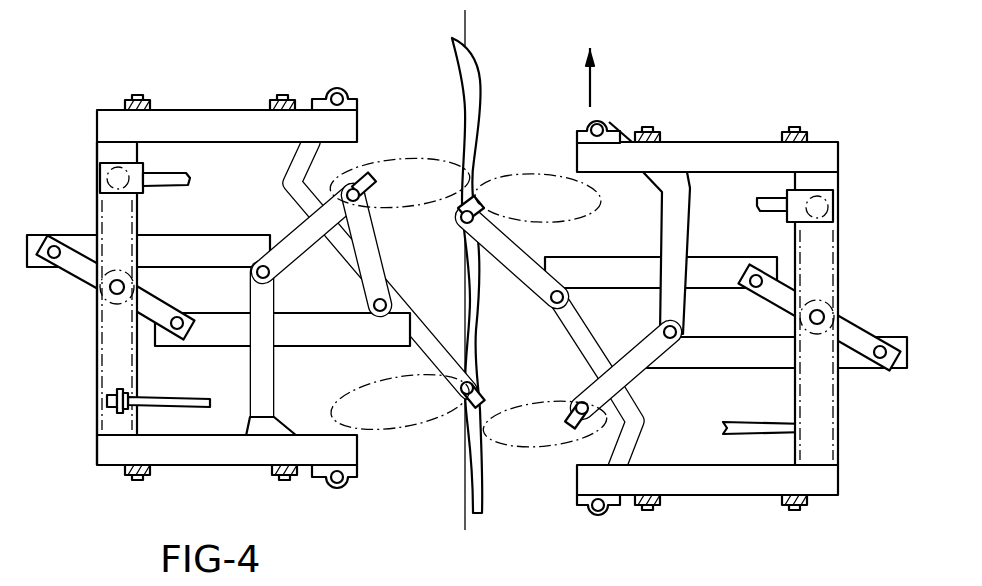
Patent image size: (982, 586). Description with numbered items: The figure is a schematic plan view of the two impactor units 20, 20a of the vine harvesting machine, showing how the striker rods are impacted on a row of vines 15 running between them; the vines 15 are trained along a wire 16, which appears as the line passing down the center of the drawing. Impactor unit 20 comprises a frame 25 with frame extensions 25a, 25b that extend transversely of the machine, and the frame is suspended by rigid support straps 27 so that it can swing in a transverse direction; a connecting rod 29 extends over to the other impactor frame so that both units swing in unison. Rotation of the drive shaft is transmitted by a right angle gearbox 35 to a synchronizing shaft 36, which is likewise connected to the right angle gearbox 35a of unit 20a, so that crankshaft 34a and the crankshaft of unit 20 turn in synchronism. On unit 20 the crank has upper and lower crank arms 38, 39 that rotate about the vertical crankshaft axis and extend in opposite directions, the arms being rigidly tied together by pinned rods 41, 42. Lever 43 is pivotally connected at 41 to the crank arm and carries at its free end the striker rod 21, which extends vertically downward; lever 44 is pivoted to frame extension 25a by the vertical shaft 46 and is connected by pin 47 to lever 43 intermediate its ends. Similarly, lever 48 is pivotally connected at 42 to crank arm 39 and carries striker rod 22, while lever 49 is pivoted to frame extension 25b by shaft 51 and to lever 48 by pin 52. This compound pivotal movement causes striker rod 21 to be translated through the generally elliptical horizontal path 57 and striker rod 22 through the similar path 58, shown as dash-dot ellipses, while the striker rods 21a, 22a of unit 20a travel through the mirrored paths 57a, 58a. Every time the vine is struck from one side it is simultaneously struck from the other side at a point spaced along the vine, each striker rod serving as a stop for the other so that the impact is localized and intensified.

The vines 15 is at (472, 62).
The wire 16 is at (462, 27).
The impactor unit 20 is at (90, 463).
The impactor unit 20a is at (873, 168).
The striker rod 21 is at (360, 188).
The striker rod 21a is at (483, 224).
The striker rod 22 is at (463, 397).
The striker rod 22a is at (572, 428).
The frame 25 is at (90, 151).
The frame extension 25a is at (218, 466).
The frame extension 25b is at (226, 110).
The support straps 27 is at (149, 99).
The connecting rod 29 is at (208, 397).
The crankshaft 34a is at (830, 316).
The right angle gearbox 35 is at (100, 180).
The right angle gearbox 35a is at (832, 207).
The synchronizing shaft 36 is at (185, 184).
The upper crank arm 38 is at (95, 292).
The lower crank arm 39 is at (188, 300).
The pinned rod 41 is at (53, 262).
The pinned rod 42 is at (178, 333).
The lever 43 is at (200, 267).
The lever 44 is at (273, 313).
The vertical shaft 46 is at (333, 478).
The pin 47 is at (265, 262).
The lever 48 is at (378, 348).
The lever 49 is at (368, 268).
The shaft 51 is at (345, 94).
The pin 52 is at (388, 300).
The elliptical path 57 is at (433, 197).
The elliptical path 57a is at (558, 180).
The elliptical path 58 is at (352, 386).
The elliptical path 58a is at (535, 402).